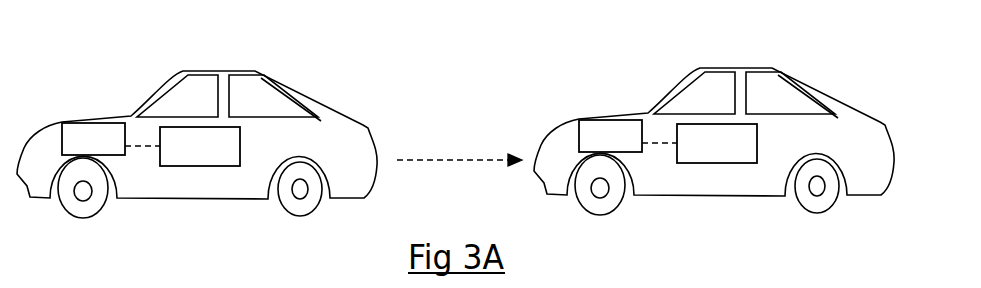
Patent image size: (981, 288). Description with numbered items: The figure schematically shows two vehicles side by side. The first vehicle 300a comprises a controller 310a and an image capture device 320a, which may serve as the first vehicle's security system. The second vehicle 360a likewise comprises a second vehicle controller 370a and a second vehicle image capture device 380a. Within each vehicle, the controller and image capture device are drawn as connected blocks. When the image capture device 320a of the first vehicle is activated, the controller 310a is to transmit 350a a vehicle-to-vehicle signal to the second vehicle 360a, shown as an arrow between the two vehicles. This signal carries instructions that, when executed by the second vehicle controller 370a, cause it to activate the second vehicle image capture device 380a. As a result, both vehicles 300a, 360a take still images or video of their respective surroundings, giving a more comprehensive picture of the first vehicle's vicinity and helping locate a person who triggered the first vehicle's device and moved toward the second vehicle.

The vehicle 300a is at (369, 103).
The controller 310a is at (93, 139).
The image capture device 320a is at (200, 146).
The transmit 350a is at (459, 148).
The second vehicle 360a is at (850, 90).
The second vehicle controller 370a is at (610, 136).
The second vehicle image capture device 380a is at (717, 143).